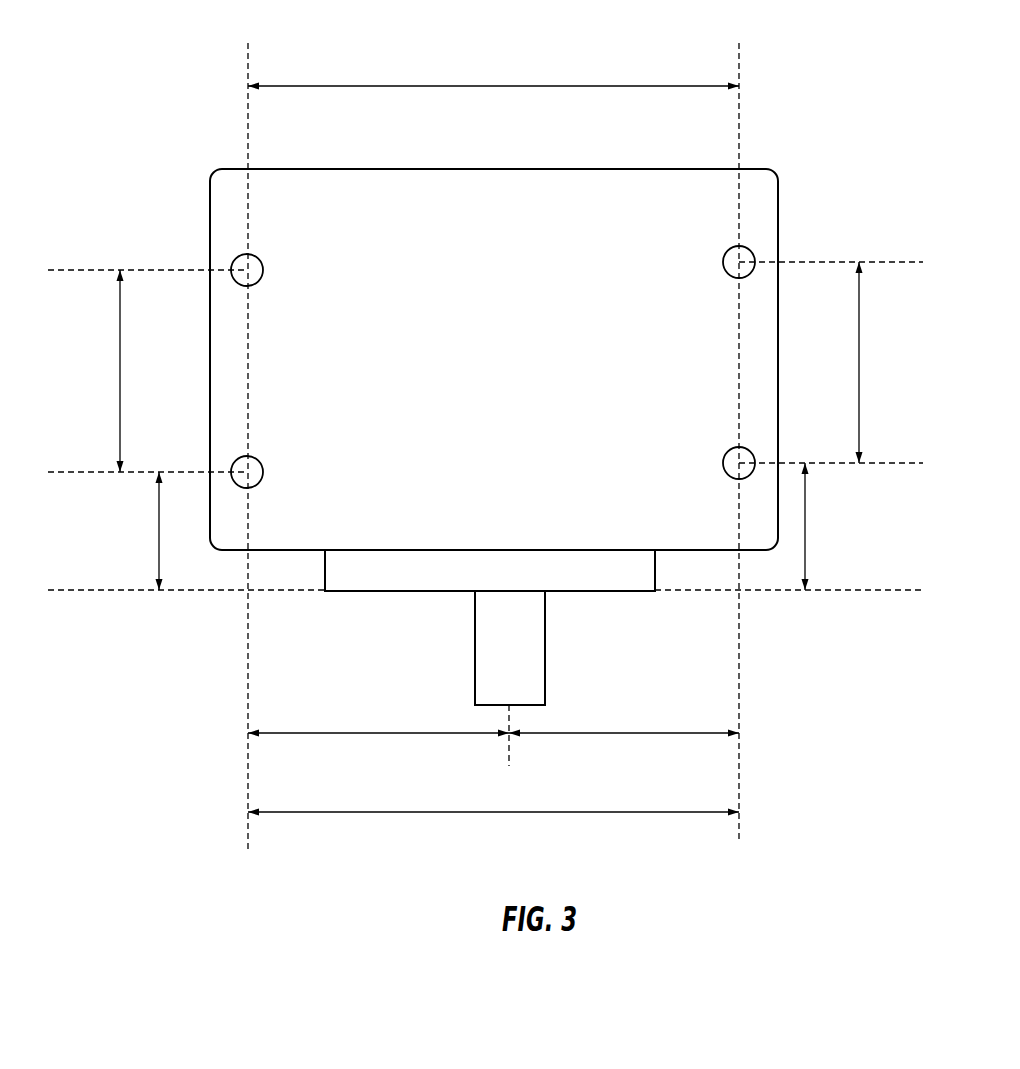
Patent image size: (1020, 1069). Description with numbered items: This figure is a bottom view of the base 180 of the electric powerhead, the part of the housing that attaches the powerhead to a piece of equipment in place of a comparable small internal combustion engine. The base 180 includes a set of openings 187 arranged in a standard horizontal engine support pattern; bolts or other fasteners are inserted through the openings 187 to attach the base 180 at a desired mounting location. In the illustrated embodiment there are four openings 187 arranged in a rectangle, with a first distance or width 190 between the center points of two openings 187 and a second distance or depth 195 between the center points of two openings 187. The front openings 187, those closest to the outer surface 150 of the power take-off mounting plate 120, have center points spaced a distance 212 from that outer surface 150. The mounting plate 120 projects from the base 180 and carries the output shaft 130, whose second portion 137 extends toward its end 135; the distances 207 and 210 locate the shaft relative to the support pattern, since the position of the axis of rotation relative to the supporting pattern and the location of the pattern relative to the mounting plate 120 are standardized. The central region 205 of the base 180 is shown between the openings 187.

The power take-off mounting plate 120 is at (366, 582).
The output shaft 130 is at (545, 672).
The end 135 is at (540, 703).
The second portion 137 is at (518, 758).
The outer surface 150 is at (413, 592).
The base 180 is at (378, 170).
The openings 187 is at (752, 257).
The width 190 is at (371, 86).
The depth 195 is at (120, 320).
The plate surface 205 is at (484, 376).
The distance 207 is at (665, 733).
The distance 210 is at (362, 733).
The distance 212 is at (159, 520).